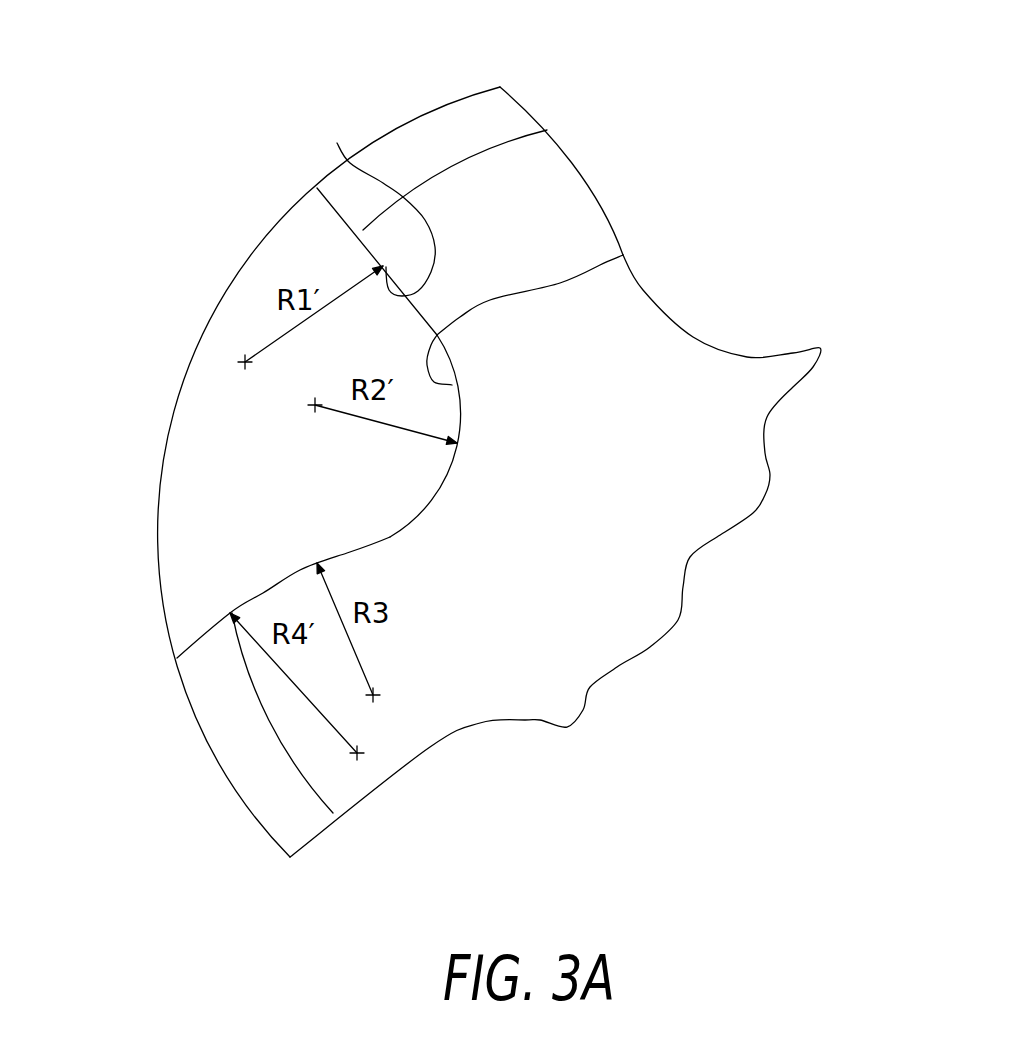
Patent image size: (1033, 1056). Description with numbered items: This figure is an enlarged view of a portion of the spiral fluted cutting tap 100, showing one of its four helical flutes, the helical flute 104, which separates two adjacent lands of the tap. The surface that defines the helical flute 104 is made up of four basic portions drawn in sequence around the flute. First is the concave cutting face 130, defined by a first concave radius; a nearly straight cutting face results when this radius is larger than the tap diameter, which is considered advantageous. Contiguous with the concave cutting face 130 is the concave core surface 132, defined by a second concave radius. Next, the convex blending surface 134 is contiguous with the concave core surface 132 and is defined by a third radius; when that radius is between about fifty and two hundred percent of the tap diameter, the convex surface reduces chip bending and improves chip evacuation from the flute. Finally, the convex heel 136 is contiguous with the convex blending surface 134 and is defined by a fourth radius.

The spiral fluted cutting tap 100 is at (620, 137).
The helical flute 104 is at (260, 457).
The concave cutting face 130 is at (370, 199).
The concave core surface 132 is at (623, 257).
The convex blending surface 134 is at (347, 550).
The convex heel 136 is at (250, 597).